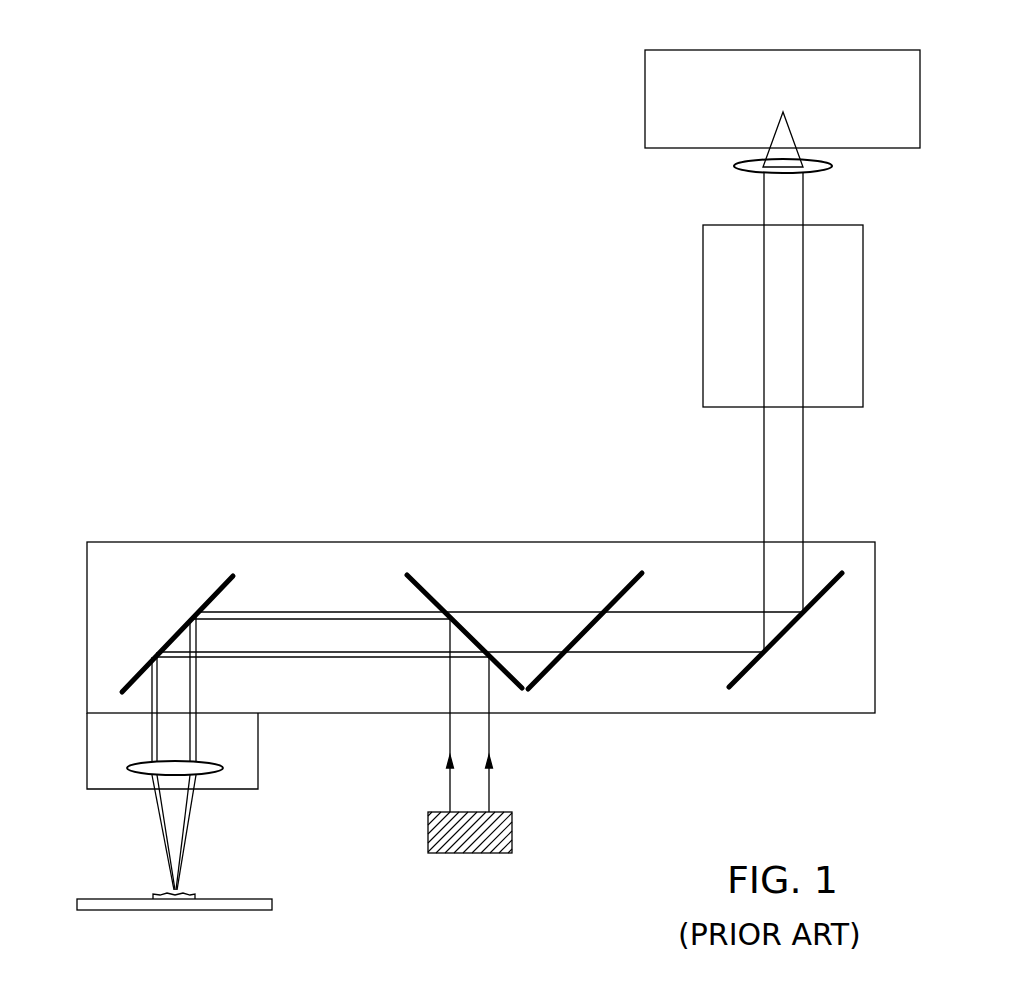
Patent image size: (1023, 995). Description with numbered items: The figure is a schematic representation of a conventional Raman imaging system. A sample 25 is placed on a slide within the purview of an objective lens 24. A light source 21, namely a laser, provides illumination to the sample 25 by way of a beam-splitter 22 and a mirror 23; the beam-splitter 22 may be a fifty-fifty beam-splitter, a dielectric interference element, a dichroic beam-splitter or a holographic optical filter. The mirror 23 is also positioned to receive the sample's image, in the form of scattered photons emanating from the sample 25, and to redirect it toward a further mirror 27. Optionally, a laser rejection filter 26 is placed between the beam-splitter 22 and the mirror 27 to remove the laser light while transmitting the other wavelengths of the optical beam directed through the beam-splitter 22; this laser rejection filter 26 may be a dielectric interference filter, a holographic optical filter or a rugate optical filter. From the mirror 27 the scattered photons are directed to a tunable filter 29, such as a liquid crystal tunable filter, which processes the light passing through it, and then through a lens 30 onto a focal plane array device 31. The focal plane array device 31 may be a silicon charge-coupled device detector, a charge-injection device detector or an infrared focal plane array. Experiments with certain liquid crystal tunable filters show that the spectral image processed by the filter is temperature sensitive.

The light source 21 is at (507, 837).
The beam-splitter 22 is at (464, 584).
The mirror 23 is at (177, 586).
The objective lens 24 is at (210, 751).
The sample 25 is at (212, 913).
The laser rejection filter 26 is at (585, 683).
The mirror 27 is at (787, 569).
The tunable filter 29 is at (820, 316).
The lens 30 is at (821, 177).
The focal plane array device 31 is at (819, 108).